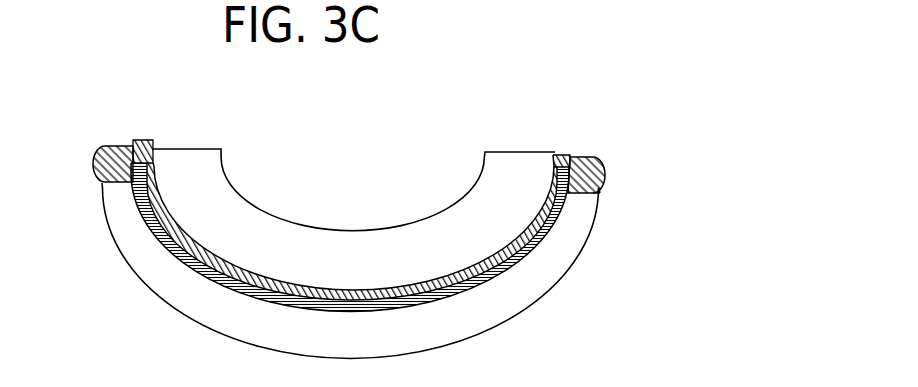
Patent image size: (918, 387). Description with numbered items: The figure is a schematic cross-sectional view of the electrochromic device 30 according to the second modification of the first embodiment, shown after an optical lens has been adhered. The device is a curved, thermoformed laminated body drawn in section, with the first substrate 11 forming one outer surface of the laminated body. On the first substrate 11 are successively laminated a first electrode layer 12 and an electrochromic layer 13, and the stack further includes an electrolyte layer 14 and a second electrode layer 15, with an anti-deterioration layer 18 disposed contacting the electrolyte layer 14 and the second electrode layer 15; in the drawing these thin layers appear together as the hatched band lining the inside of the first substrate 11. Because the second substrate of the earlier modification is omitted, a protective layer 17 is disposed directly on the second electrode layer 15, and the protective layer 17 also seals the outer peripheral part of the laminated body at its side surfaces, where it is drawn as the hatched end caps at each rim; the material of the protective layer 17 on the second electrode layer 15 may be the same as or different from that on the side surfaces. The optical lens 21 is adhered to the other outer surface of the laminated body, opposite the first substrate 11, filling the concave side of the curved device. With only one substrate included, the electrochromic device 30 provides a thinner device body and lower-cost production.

The first substrate 11 is at (489, 318).
The first electrode layer 12 is at (454, 225).
The electrochromic layer 13 is at (454, 225).
The electrolyte layer 14 is at (454, 225).
The anti-deterioration layer 18 is at (454, 225).
The second electrode layer 15 is at (493, 276).
The protective layer 17 is at (110, 152).
The optical lens 21 is at (531, 166).
The electrochromic device 30 is at (419, 132).